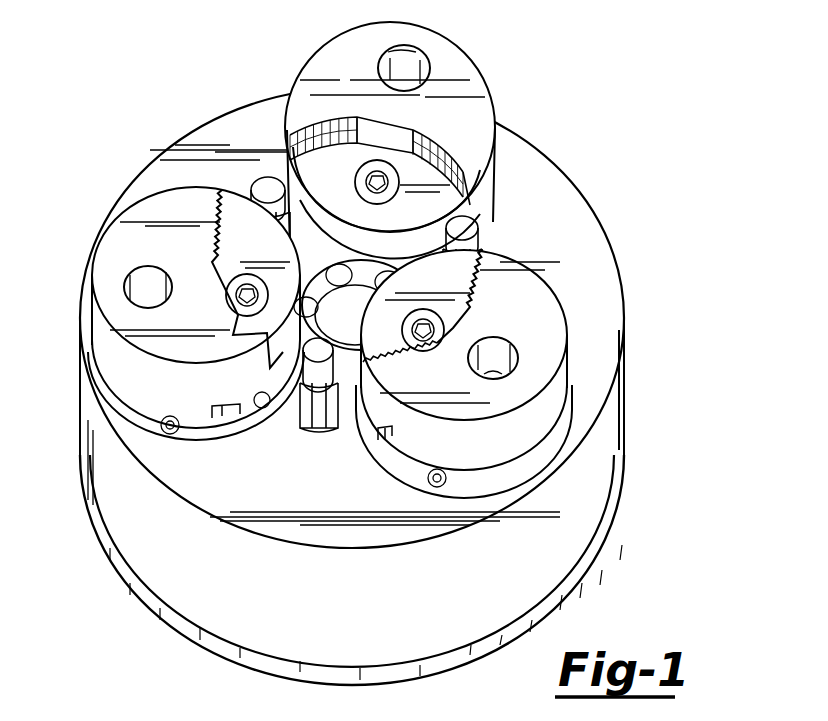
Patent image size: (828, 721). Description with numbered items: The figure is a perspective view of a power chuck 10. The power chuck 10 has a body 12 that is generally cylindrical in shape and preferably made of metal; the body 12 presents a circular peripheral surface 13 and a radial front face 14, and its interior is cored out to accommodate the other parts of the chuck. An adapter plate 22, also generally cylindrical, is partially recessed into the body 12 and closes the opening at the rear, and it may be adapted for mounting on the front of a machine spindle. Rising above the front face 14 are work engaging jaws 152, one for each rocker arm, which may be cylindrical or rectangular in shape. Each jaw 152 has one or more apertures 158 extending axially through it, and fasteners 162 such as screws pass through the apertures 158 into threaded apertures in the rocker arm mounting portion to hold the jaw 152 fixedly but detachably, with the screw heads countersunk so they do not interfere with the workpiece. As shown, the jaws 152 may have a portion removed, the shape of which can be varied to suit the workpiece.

The power chuck 10 is at (364, 349).
The body 12 is at (386, 386).
The circular peripheral surface 13 is at (628, 390).
The radial front face 14 is at (603, 318).
The adapter plate 22 is at (605, 537).
The work engaging jaw 152 is at (364, 256).
The apertures 158 is at (493, 377).
The fasteners 162 is at (402, 330).